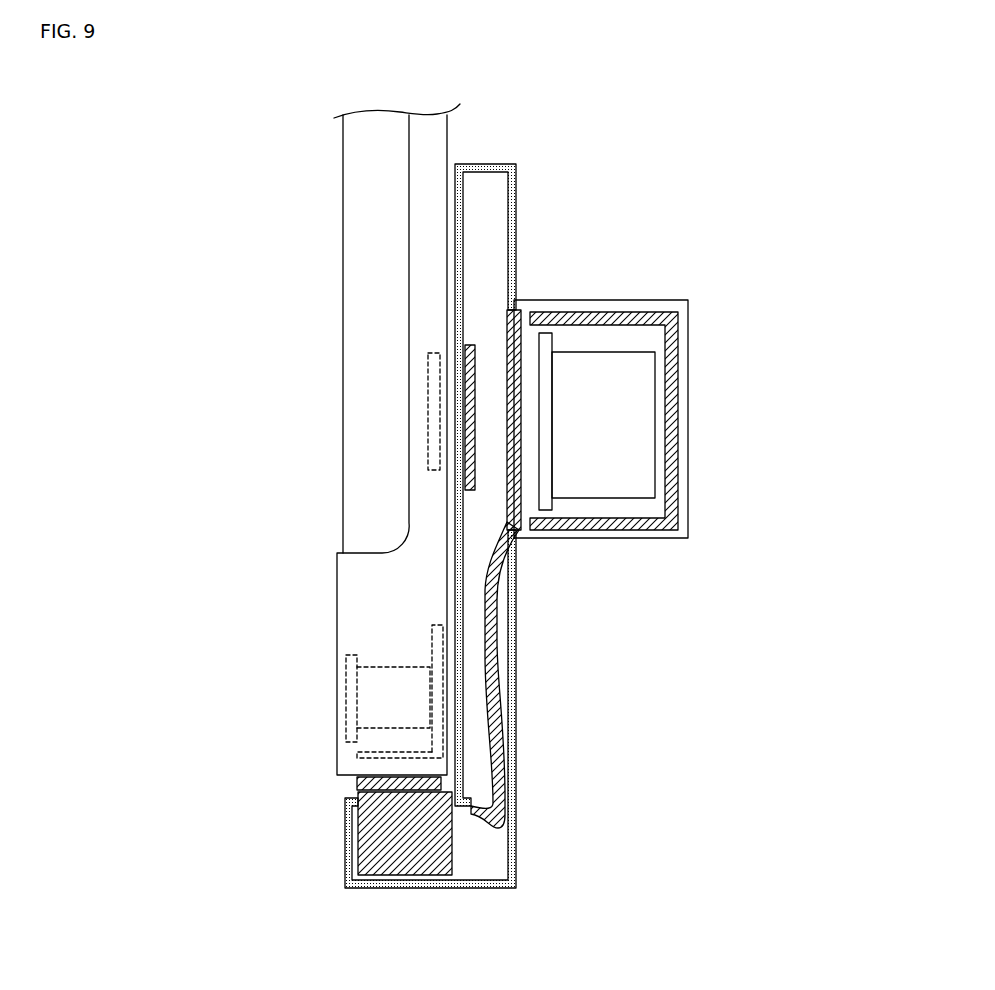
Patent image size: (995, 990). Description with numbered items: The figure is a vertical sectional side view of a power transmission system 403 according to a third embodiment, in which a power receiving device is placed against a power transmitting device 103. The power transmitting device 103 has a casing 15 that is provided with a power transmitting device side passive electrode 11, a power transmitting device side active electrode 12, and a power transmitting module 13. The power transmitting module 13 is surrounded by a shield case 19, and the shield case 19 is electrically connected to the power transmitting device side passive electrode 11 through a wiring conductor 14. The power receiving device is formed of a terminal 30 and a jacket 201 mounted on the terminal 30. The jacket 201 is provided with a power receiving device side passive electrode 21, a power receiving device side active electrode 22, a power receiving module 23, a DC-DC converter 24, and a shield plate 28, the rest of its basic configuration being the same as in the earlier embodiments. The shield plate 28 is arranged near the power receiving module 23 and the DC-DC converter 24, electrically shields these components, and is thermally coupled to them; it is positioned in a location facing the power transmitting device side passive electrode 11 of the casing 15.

The power transmission system 403 is at (714, 66).
The terminal 30 is at (343, 226).
The jacket 201 is at (425, 133).
The power receiving device side active electrode 22 is at (428, 407).
The power receiving module 23 is at (378, 700).
The DC-DC converter 24 is at (437, 691).
The shield plate 28 is at (437, 738).
The power receiving device side passive electrode 21 is at (357, 785).
The power transmitting device side passive electrode 11 is at (400, 860).
The casing 15 is at (512, 161).
The wiring conductor 14 is at (496, 644).
The power transmitting device side active electrode 12 is at (477, 342).
The shield case 19 is at (678, 493).
The power transmitting module 13 is at (640, 415).
The power transmitting device 103 is at (577, 184).